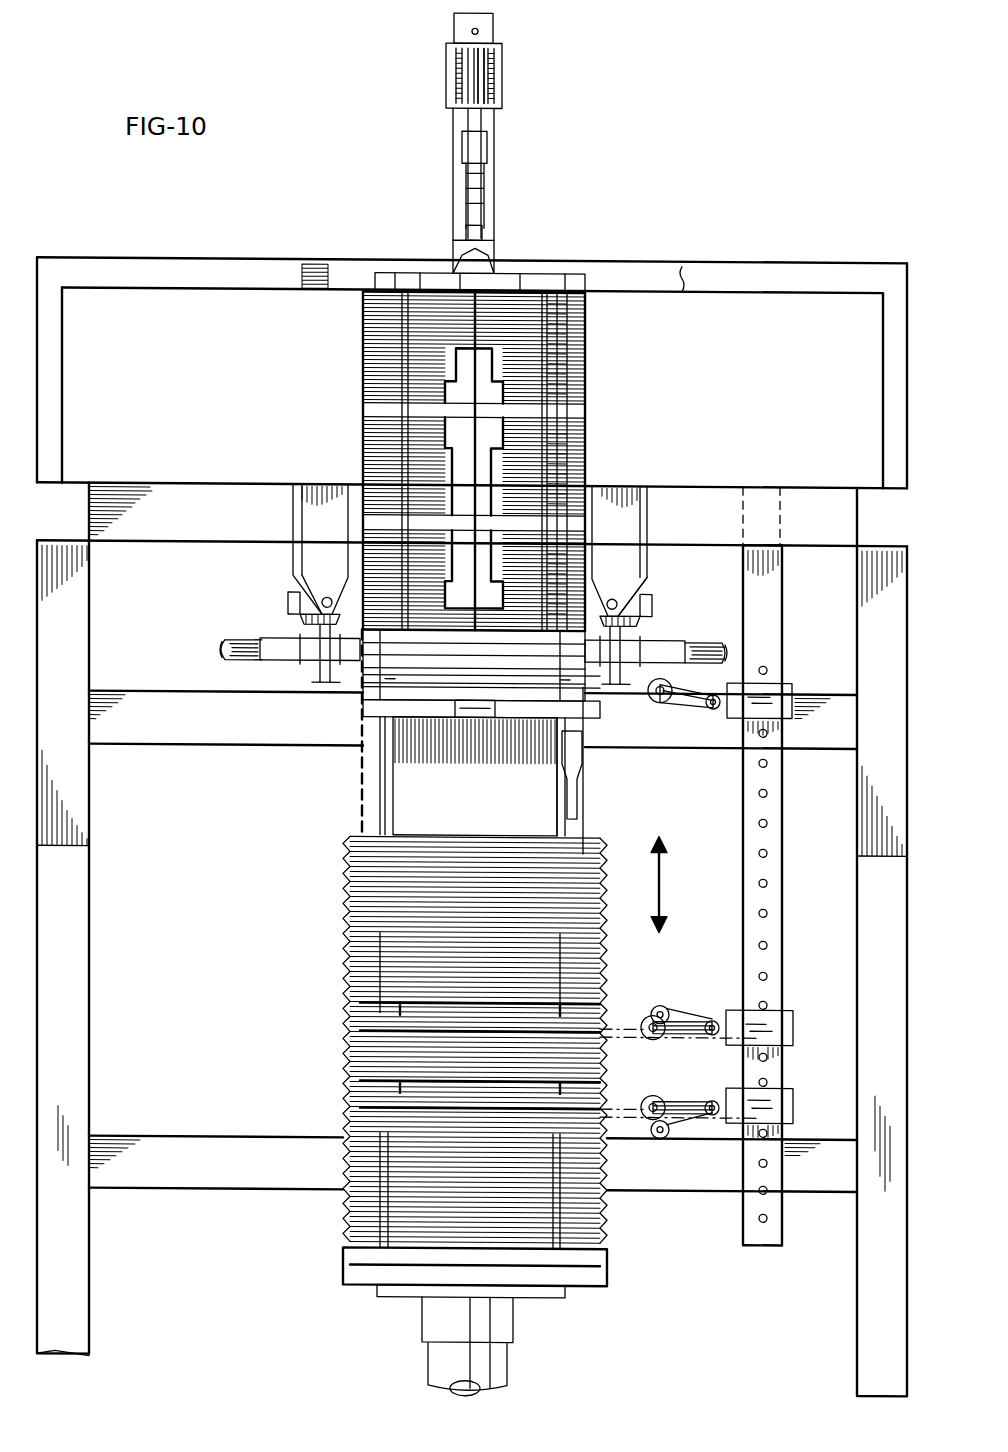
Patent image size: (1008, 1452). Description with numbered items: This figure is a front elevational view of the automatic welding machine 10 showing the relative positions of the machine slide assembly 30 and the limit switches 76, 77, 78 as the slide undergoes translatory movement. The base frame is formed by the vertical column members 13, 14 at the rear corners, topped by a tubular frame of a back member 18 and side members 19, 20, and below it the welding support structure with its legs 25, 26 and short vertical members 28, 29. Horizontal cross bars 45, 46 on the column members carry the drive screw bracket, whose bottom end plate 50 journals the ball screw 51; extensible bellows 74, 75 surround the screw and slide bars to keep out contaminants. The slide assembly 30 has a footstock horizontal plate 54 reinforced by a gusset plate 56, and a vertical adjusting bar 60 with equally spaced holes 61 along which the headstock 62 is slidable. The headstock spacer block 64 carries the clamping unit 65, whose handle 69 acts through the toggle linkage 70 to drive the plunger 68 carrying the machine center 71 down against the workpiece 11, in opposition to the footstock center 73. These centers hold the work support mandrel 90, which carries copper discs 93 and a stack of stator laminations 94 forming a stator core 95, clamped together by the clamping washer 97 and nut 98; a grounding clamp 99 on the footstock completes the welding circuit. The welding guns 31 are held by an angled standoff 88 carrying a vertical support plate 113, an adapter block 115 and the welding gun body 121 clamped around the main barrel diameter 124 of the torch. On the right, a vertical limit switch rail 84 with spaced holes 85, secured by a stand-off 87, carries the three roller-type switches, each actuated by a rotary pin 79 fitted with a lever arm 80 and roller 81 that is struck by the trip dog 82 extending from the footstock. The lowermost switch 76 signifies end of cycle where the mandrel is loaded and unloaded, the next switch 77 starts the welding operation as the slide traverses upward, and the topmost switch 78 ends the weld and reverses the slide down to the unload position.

The automatic welding machine 10 is at (472, 782).
The workpiece 11 is at (450, 461).
The vertical column member 13 is at (860, 1026).
The vertical column member 14 is at (80, 938).
The back member 18 is at (323, 268).
The side member 19 is at (889, 270).
The side member 20 is at (55, 262).
The leg 25 is at (862, 482).
The leg 26 is at (71, 482).
The short vertical member 28 is at (885, 400).
The short vertical member 29 is at (52, 400).
The machine slide assembly 30 is at (458, 711).
The welding gun 31 is at (494, 646).
The horizontal cross bar 45 is at (227, 743).
The horizontal cross bar 46 is at (203, 1140).
The bottom end plate 50 is at (382, 1290).
The ball screw 51 is at (440, 1356).
The horizontal plate 54 is at (528, 716).
The gusset plate 56 is at (395, 823).
The vertical adjusting bar 60 is at (452, 182).
The horizontally-drilled holes 61 is at (478, 29).
The headstock 62 is at (497, 245).
The spacer block 64 is at (500, 80).
The clamping unit 65 is at (462, 142).
The plunger 68 is at (484, 190).
The handle 69 is at (468, 122).
The toggle linkage 70 is at (460, 64).
The machine center 71 is at (460, 230).
The footstock center 73 is at (479, 746).
The extensible bellows 74 is at (347, 585).
The extensible bellows 75 is at (345, 889).
The lowermost limit switch 76 is at (778, 1106).
The limit switch 77 is at (775, 1017).
The topmost limit switch 78 is at (786, 686).
The rotary pin 79 is at (711, 704).
The lever arm 80 is at (679, 710).
The roller 81 is at (650, 698).
The trip dog 82 is at (615, 712).
The limit switch rail 84 is at (787, 895).
The holes 85 is at (768, 920).
The stand-off 87 is at (785, 494).
The standoff 88 is at (194, 491).
The work support mandrel 90 is at (396, 678).
The copper disc 93 is at (365, 302).
The stator laminations 94 is at (376, 338).
The stator core 95 is at (590, 300).
The clamping washer 97 is at (404, 280).
The nut 98 is at (489, 252).
The grounding clamp 99 is at (577, 808).
The vertical support plate 113 is at (300, 520).
The adapter block 115 is at (290, 596).
The welding gun body 121 is at (300, 630).
The main barrel diameter 124 is at (265, 646).